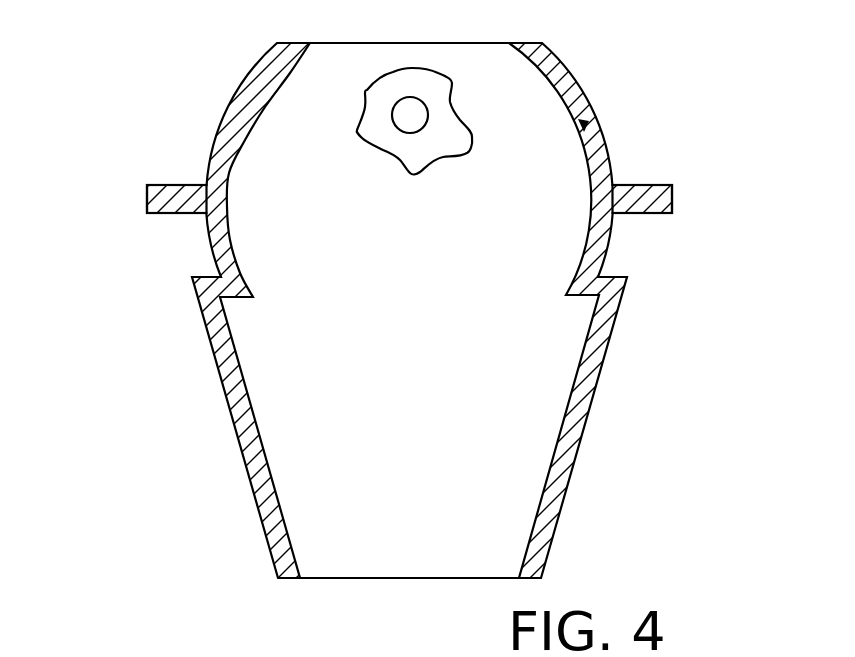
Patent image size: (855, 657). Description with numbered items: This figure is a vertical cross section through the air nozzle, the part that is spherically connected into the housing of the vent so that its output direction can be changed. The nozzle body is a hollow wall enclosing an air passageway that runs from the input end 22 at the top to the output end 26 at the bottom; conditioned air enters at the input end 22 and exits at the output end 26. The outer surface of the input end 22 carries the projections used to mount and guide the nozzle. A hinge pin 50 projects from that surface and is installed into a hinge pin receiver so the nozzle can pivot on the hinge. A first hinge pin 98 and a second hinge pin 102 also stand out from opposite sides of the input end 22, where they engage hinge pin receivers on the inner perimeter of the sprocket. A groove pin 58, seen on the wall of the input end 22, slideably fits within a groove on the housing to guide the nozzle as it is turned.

The input end 22 is at (310, 44).
The output end 26 is at (408, 578).
The hinge pin 50 is at (645, 213).
The groove pin 58 is at (428, 110).
The first hinge pin 98 is at (643, 185).
The second hinge pin 102 is at (182, 213).